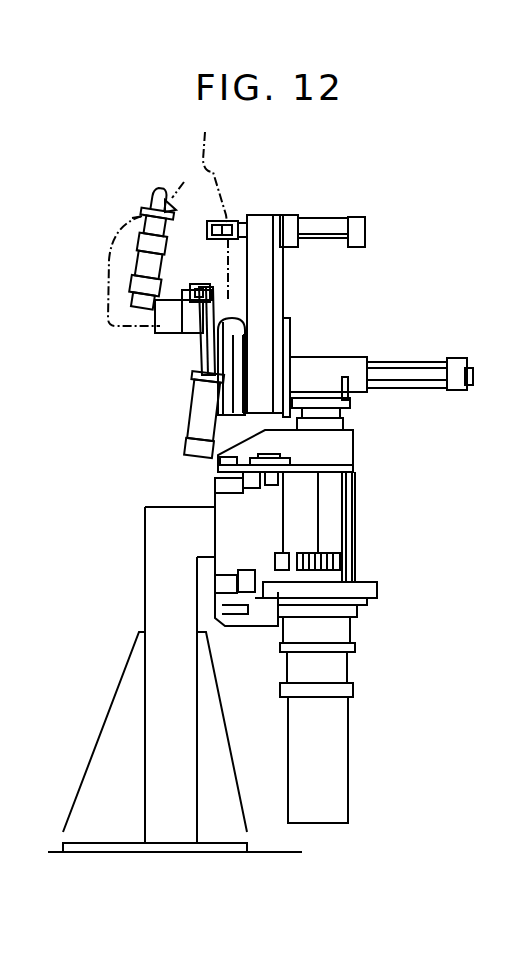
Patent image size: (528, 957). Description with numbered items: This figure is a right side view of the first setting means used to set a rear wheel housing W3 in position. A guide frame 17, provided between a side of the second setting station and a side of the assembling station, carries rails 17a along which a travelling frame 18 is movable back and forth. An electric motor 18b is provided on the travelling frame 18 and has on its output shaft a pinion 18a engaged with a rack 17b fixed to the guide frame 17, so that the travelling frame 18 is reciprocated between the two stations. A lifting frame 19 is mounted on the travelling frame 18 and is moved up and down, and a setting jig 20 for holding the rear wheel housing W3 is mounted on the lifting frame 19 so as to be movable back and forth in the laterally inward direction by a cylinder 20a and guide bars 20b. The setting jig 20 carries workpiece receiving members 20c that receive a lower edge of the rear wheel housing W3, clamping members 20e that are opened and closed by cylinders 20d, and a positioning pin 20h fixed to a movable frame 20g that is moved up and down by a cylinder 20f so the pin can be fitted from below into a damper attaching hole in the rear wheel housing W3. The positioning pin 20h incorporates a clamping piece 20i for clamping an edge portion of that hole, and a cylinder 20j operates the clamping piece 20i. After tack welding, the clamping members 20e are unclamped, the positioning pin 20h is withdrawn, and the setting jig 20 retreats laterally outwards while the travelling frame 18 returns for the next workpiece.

The guide frame 17 is at (228, 528).
The rails 17a is at (223, 492).
The rack 17b is at (290, 555).
The travelling frame 18 is at (345, 455).
The pinion 18a is at (345, 563).
The electric motor 18b is at (332, 738).
The lifting frame 19 is at (345, 405).
The setting jig 20 is at (265, 360).
The cylinder 20a is at (435, 365).
The guide bars 20b is at (392, 375).
The workpiece receiving members 20c is at (200, 358).
The cylinders 20d is at (335, 228).
The clamping members 20e is at (222, 226).
The cylinder 20f is at (210, 415).
The movable frame 20g is at (167, 330).
The positioning pin 20h is at (150, 198).
The clamping piece 20i is at (173, 200).
The cylinder 20j is at (160, 266).
The rear wheel housing W3 is at (168, 224).